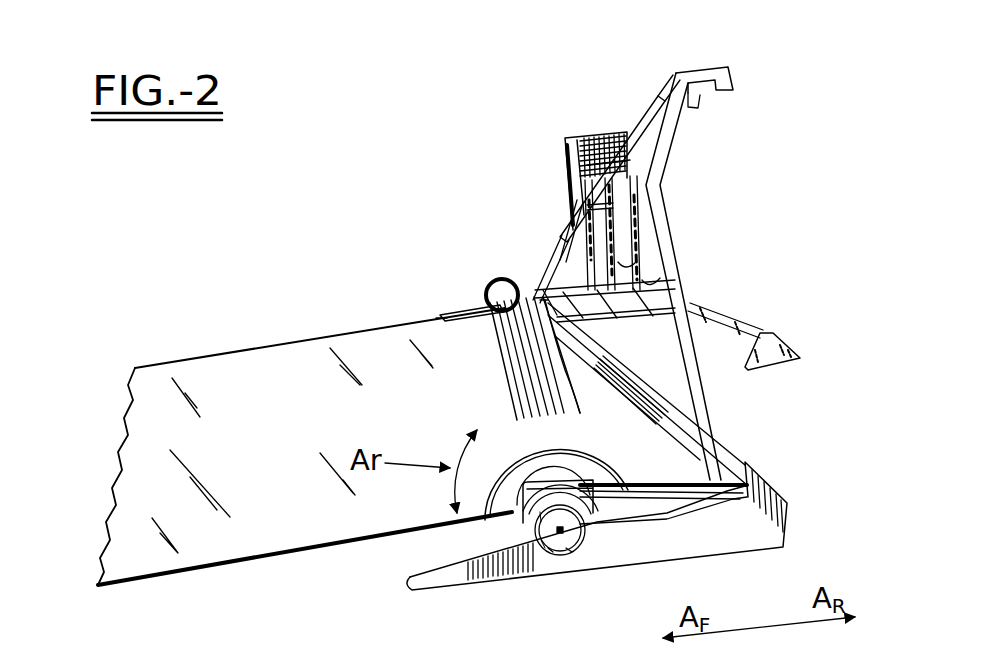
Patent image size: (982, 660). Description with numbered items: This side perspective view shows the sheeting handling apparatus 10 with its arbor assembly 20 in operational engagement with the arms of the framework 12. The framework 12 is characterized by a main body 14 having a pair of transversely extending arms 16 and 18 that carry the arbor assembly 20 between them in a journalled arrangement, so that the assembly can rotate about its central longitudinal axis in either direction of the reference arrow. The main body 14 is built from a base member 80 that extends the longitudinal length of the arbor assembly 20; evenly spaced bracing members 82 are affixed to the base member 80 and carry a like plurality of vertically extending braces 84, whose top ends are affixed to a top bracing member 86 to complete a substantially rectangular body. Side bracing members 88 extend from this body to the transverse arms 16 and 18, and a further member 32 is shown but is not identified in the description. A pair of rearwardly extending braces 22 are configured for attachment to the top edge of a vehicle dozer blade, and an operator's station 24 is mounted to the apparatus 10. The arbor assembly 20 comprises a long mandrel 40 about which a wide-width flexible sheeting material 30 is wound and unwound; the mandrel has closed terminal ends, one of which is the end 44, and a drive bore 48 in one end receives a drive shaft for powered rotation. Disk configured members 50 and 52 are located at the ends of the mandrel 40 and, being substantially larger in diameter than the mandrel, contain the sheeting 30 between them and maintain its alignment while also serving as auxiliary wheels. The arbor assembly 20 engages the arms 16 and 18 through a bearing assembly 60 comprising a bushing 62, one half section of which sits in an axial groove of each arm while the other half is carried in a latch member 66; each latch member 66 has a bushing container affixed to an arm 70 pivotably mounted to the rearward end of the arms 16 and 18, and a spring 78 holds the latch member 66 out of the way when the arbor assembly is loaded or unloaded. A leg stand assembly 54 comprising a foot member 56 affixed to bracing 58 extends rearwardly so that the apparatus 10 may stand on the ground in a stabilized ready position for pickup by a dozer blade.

The apparatus 10 is at (455, 148).
The framework 12 is at (553, 233).
The main body 14 is at (565, 143).
The arm 16 is at (455, 305).
The arm 18 is at (435, 585).
The arbor assembly 20 is at (483, 283).
The rearwardly extending braces 22 is at (713, 80).
The operator's station 24 is at (584, 135).
The flexible sheeting material 30 is at (290, 365).
The diagonal brace 32 is at (652, 111).
The mandrel 40 is at (505, 315).
The terminal end 44 is at (560, 540).
The drive bore 48 is at (565, 533).
The disk member 50 is at (496, 280).
The disk member 52 is at (520, 432).
The leg stand assembly 54 is at (805, 370).
The foot member 56 is at (772, 342).
The bracing 58 is at (748, 332).
The bearing assembly 60 is at (600, 548).
The bushing 62 is at (530, 538).
The latch member 66 is at (492, 520).
The arm 70 is at (720, 500).
The spring 78 is at (700, 470).
The base member 80 is at (690, 440).
The bracing members 82 is at (640, 320).
The vertically extending braces 84 is at (633, 293).
The top bracing member 86 is at (565, 182).
The side bracing members 88 is at (565, 217).